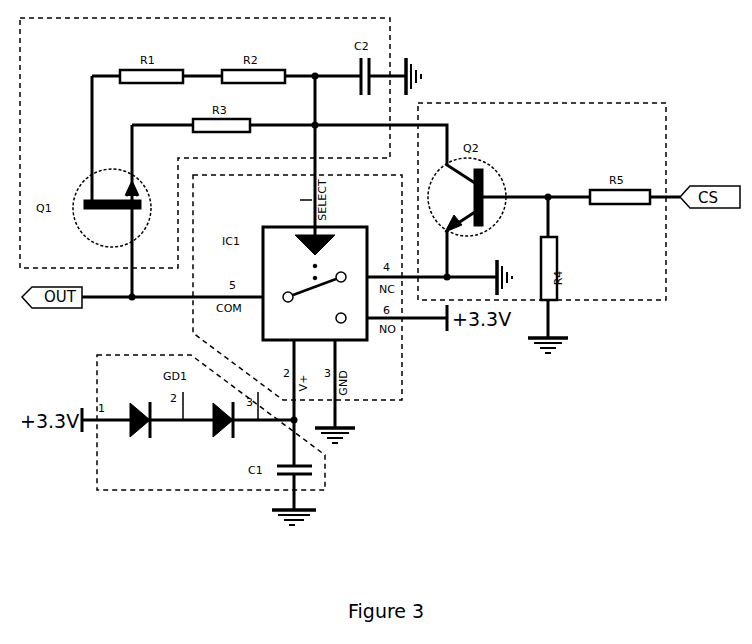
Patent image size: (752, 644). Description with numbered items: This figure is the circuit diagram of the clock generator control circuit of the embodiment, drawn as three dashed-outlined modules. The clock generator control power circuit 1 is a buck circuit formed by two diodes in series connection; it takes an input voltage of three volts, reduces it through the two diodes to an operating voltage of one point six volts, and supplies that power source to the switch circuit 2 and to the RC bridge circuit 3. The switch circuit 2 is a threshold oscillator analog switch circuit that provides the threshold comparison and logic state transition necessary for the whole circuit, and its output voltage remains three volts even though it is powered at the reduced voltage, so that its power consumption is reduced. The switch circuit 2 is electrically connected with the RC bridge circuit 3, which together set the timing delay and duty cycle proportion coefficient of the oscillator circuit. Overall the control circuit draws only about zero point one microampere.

The clock generator control power circuit 1 is at (381, 296).
The switch circuit 2 is at (297, 287).
The RC bridge circuit 3 is at (205, 143).